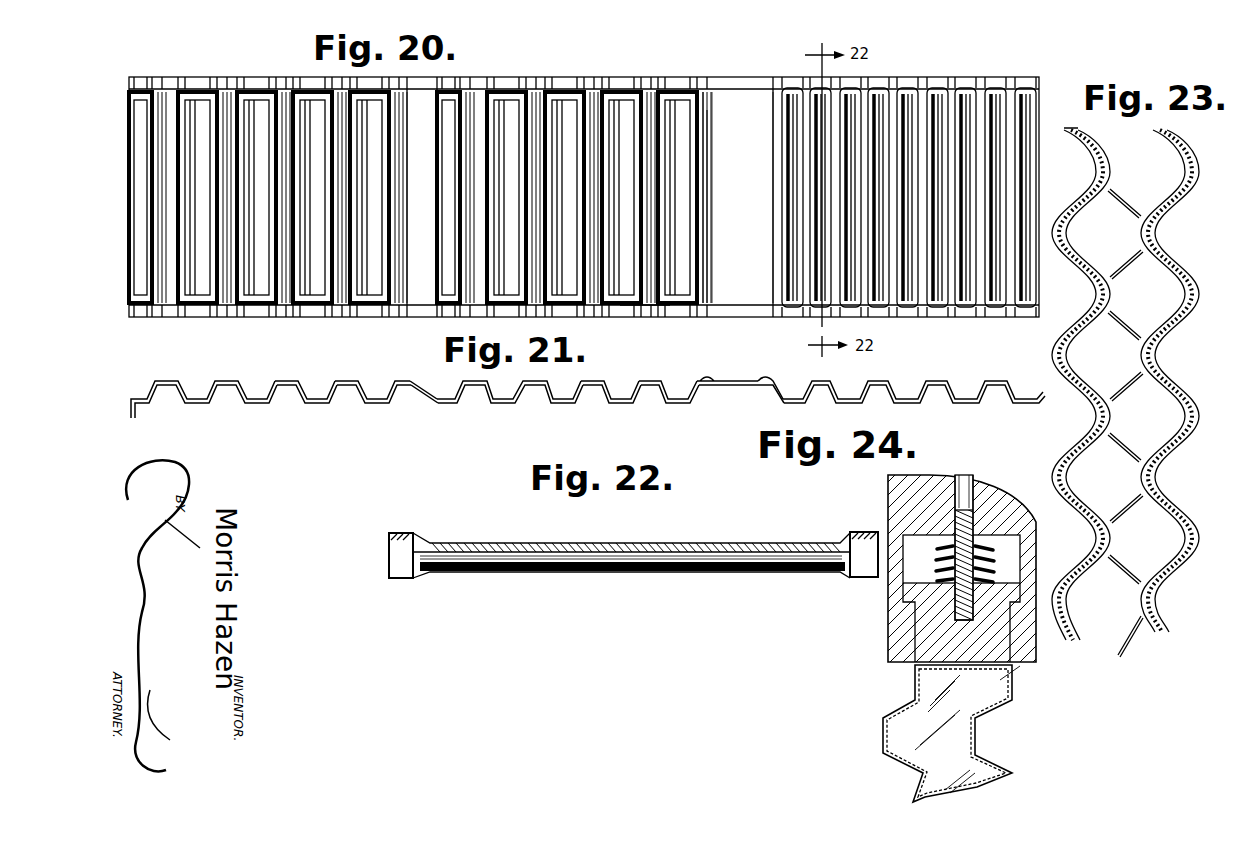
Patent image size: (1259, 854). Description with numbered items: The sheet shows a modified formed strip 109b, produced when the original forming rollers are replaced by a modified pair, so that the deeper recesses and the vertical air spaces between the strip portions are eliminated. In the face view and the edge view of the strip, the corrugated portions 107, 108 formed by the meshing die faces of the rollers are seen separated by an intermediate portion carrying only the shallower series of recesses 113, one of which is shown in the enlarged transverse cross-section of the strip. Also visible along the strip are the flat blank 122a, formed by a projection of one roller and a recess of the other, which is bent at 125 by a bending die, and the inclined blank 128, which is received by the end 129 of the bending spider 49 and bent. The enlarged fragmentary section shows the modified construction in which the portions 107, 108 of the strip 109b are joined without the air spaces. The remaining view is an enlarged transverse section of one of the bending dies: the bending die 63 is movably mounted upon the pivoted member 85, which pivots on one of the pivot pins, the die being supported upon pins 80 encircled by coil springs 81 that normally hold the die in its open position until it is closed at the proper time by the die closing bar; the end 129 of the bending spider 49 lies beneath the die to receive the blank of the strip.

In FIG. 20, the portion of formed strip 107 is at (256, 118).
In FIG. 21, the portion of formed strip 107 is at (296, 380).
In FIG. 23, the portion of formed strip 107 is at (1187, 167).
In FIG. 20, the portion of formed strip 108 is at (616, 118).
In FIG. 21, the portion of formed strip 108 is at (613, 385).
In FIG. 23, the portion of formed strip 108 is at (1068, 229).
In FIG. 20, the formed strip 109b is at (645, 318).
In FIG. 23, the formed strip 109b is at (1145, 311).
In FIG. 22, the recess 113 is at (807, 541).
In FIG. 20, the blank 122a is at (762, 209).
In FIG. 21, the blank 122a is at (738, 370).
In FIG. 21, the bend 125 is at (712, 379).
In FIG. 20, the inclined blank 128 is at (423, 197).
In FIG. 21, the inclined blank 128 is at (423, 395).
In FIG. 24, the bending die 63 is at (986, 500).
In FIG. 24, the pin 80 is at (973, 527).
In FIG. 24, the coil spring 81 is at (1000, 558).
In FIG. 24, the pivoted member 85 is at (928, 630).
In FIG. 24, the end of bending spider 129 is at (975, 690).
In FIG. 24, the bending spider 49 is at (993, 765).